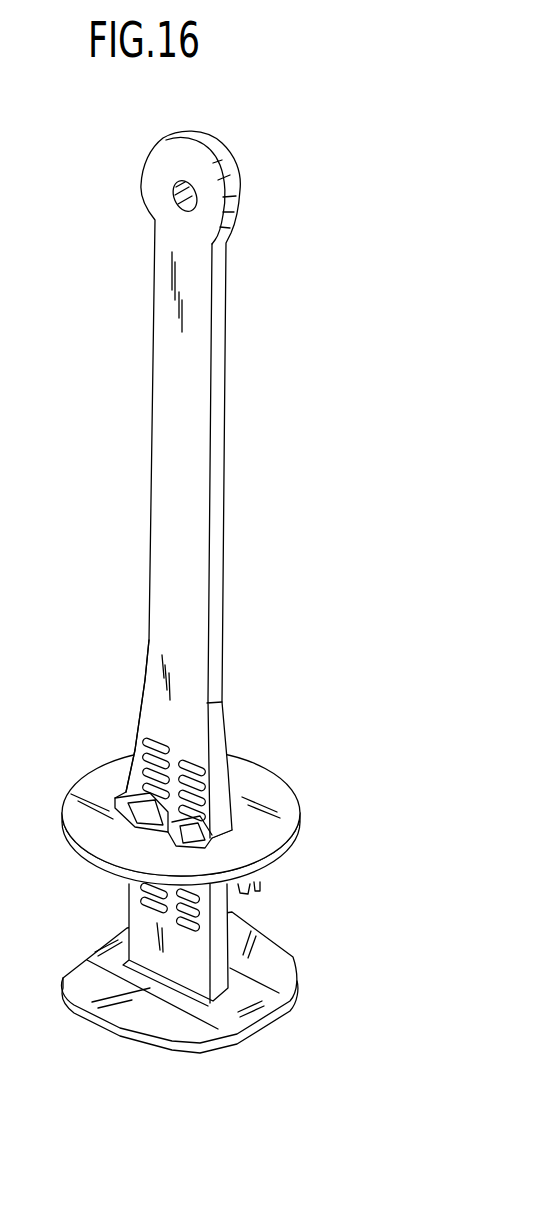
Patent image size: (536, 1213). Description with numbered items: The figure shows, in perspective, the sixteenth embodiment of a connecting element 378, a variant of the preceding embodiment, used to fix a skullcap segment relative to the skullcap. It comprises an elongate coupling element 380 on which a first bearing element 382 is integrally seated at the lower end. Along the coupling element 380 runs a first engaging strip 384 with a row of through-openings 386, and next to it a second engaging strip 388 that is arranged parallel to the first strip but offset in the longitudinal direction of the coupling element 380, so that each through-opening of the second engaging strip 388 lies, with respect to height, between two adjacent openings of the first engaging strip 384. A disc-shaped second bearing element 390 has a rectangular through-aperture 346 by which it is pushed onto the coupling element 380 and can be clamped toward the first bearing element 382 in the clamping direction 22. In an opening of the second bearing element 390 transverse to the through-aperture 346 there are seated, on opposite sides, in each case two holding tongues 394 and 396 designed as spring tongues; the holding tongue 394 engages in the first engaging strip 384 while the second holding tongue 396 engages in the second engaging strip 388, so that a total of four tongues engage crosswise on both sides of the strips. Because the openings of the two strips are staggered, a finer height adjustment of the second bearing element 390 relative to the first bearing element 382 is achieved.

The clamping direction 22 is at (115, 523).
The through-aperture 346 is at (233, 818).
The connecting element 378 is at (244, 556).
The coupling element 380 is at (226, 621).
The first bearing element 382 is at (176, 1066).
The first engaging strip 384 is at (154, 728).
The through-openings 386 is at (143, 753).
The second engaging strip 388 is at (197, 756).
The second bearing element 390 is at (308, 790).
The holding tongue 394 is at (138, 828).
The second holding tongue 396 is at (174, 848).